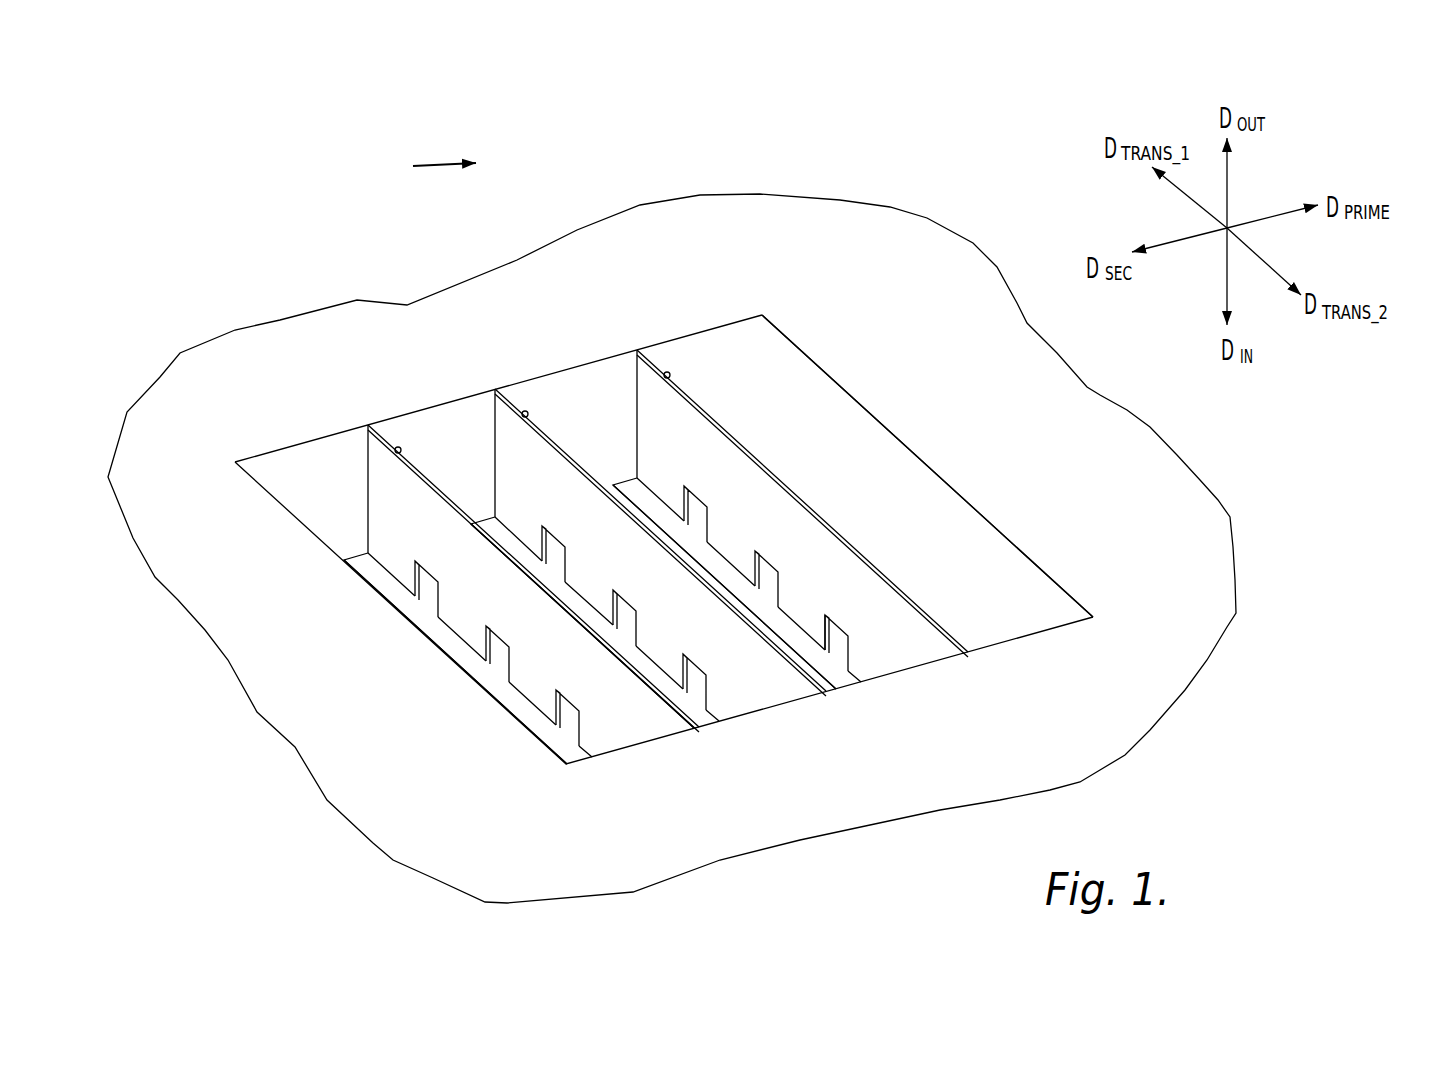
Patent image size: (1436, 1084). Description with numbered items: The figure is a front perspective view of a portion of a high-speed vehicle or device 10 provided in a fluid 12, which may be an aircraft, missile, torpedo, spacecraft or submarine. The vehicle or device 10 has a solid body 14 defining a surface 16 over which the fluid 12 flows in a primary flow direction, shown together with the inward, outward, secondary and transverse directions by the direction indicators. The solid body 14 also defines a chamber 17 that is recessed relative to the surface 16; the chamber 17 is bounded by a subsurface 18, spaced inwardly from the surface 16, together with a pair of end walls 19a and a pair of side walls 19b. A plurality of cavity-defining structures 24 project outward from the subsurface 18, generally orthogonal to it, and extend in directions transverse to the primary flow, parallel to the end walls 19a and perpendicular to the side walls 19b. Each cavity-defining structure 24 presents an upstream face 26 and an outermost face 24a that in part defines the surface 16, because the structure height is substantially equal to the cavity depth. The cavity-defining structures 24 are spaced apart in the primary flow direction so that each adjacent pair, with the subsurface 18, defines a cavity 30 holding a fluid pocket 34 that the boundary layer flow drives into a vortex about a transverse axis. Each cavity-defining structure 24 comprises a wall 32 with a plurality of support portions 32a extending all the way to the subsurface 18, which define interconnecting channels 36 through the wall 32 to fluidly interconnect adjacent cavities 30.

The vehicle or device 10 is at (925, 148).
The fluid 12 is at (427, 167).
The solid body 14 is at (898, 272).
The surface 16 is at (938, 406).
The chamber 17 is at (718, 443).
The subsurface 18 is at (828, 619).
The end walls 19a is at (968, 524).
The side walls 19b is at (560, 388).
The cavity-defining structures 24 is at (608, 708).
The outermost face 24a is at (398, 447).
The upstream face 26 is at (529, 470).
The cavity 30 is at (518, 527).
The wall 32 is at (642, 708).
The support portions 32a is at (385, 545).
The fluid pocket 34 is at (497, 525).
The interconnecting channel 36 is at (500, 663).